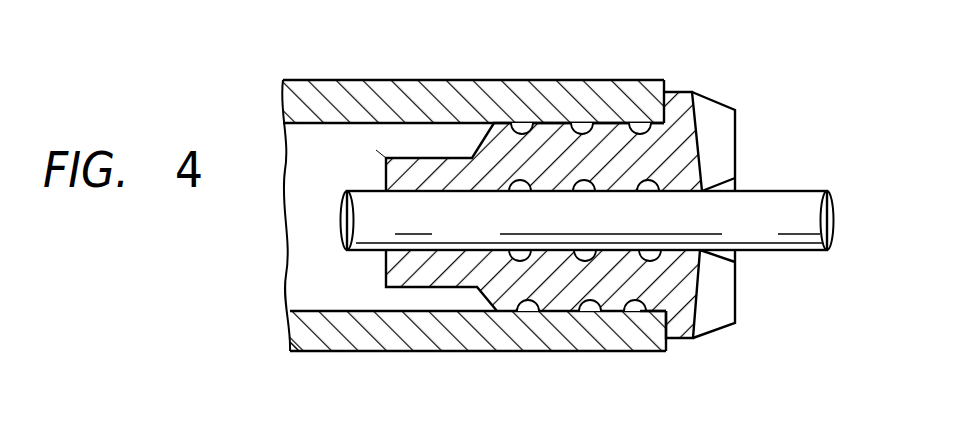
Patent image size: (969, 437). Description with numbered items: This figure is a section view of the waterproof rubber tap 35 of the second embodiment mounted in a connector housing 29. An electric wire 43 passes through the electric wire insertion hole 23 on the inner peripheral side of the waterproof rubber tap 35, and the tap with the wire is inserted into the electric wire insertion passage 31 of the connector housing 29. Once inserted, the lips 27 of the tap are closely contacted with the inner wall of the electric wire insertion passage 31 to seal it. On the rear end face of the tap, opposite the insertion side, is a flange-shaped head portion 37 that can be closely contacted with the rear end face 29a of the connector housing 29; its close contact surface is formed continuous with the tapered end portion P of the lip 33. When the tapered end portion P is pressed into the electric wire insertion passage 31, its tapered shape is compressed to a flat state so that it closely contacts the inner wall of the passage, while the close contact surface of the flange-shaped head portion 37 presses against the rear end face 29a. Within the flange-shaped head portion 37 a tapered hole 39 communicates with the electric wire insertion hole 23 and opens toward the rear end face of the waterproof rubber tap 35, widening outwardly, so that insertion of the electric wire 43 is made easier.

The electric wire insertion hole 23 is at (470, 250).
The lips 27 is at (545, 122).
The connector housing 29 is at (425, 80).
The rear end face of the connector housing 29a is at (666, 82).
The electric wire insertion passage 31 is at (348, 315).
The lip 33 is at (645, 105).
The waterproof rubber tap 35 is at (376, 152).
The flange-shaped head portion 37 is at (680, 340).
The tapered hole 39 is at (733, 250).
The electric wire 43 is at (785, 190).
The tapered end portion P is at (658, 333).